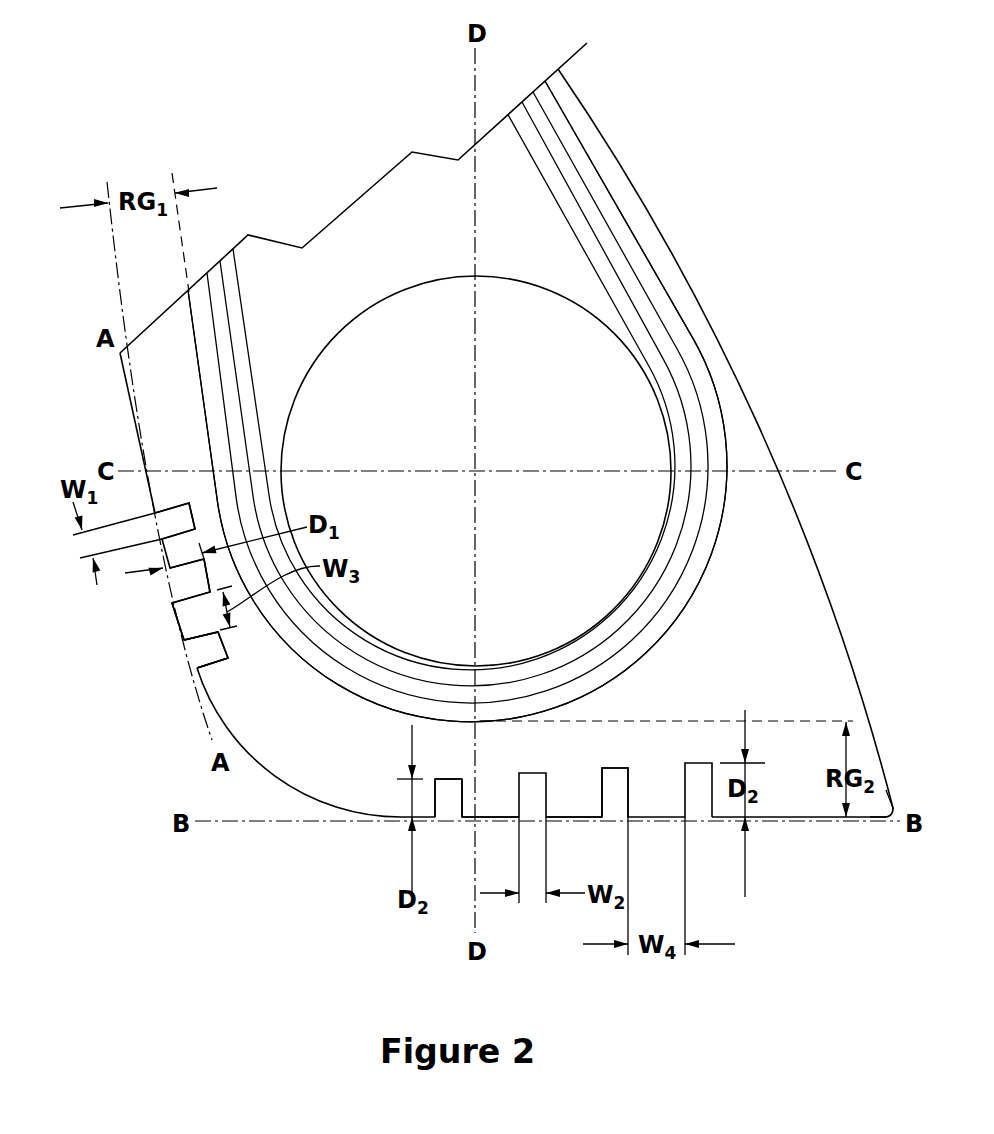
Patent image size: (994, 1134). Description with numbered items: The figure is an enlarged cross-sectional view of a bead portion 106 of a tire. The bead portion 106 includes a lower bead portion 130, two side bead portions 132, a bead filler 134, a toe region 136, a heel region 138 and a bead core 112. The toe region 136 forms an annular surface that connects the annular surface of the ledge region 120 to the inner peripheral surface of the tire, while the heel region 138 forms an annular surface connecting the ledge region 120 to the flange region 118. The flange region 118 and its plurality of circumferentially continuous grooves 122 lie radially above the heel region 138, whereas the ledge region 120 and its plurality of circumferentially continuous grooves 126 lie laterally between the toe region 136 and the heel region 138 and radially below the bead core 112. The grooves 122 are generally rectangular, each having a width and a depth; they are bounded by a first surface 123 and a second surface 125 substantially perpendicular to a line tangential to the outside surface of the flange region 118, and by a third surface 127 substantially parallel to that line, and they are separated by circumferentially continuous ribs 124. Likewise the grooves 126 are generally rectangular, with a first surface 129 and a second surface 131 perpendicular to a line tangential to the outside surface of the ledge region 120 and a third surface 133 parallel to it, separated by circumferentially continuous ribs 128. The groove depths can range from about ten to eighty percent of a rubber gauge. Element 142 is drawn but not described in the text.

The bead portion 106 is at (700, 290).
The bead core 112 is at (620, 413).
The flange region 118 is at (174, 603).
The ledge region 120 is at (528, 801).
The circumferentially continuous grooves 122 is at (192, 584).
The first surface 123 is at (202, 638).
The circumferentially continuous ribs 124 is at (198, 615).
The second surface 125 is at (213, 665).
The circumferentially continuous grooves 126 is at (618, 800).
The third surface 127 is at (227, 642).
The circumferentially continuous ribs 128 is at (497, 807).
The first surface 129 is at (433, 796).
The lower bead portion 130 is at (502, 760).
The second surface 131 is at (467, 800).
The side bead portions 132 is at (754, 507).
The third surface 133 is at (455, 778).
The bead filler 134 is at (530, 233).
The toe region 136 is at (893, 795).
The heel region 138 is at (297, 740).
The slot 142 is at (162, 540).